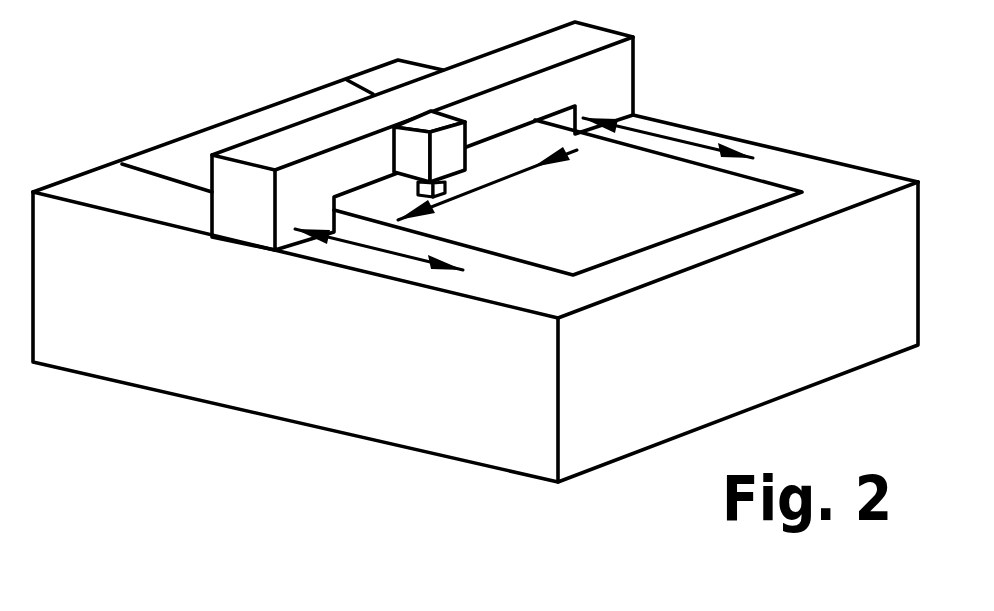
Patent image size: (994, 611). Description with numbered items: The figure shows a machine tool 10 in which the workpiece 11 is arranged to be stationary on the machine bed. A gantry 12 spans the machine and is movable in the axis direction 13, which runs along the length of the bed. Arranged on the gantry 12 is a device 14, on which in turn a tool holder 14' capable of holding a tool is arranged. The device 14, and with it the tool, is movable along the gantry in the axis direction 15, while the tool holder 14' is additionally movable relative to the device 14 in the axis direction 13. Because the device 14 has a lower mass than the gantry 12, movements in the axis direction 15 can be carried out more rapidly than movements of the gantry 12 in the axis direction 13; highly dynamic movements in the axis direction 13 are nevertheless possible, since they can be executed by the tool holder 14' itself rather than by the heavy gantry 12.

The machine tool 10 is at (273, 388).
The workpiece 11 is at (570, 242).
The gantry 12 is at (268, 148).
The axis direction 13 is at (413, 257).
The device 14 is at (373, 153).
The tool holder 14' is at (358, 241).
The axis direction 15 is at (490, 185).